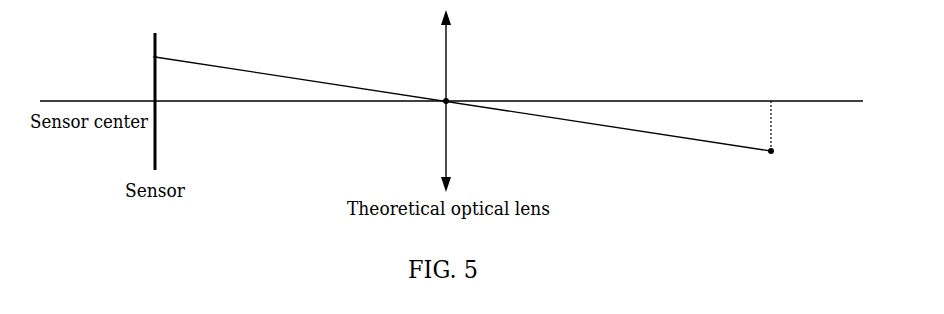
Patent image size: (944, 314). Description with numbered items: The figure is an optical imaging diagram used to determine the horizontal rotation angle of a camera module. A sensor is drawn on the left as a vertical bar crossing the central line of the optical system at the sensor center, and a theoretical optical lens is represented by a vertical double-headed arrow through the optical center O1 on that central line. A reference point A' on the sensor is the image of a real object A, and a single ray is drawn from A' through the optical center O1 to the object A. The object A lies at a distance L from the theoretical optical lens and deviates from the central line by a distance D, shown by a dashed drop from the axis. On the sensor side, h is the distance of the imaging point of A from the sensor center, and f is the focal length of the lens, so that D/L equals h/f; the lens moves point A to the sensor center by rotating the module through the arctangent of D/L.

The optical center O1 is at (526, 76).
The real object A is at (793, 165).
The reference point A' is at (111, 45).
The distance of imaging point from sensor center h is at (134, 70).
The focal length f is at (249, 126).
The distance of object from theoretical optical lens L is at (628, 82).
The deviation distance from central line D is at (789, 126).